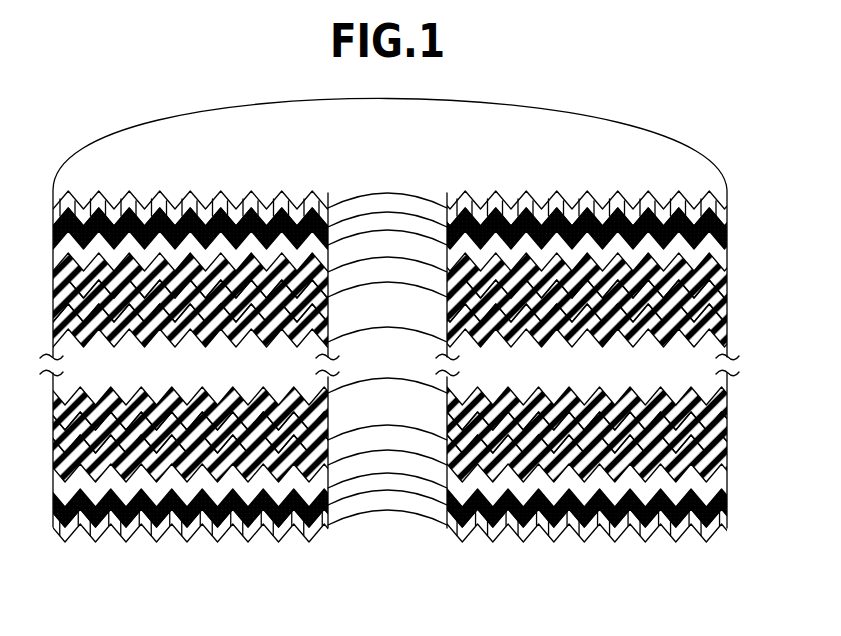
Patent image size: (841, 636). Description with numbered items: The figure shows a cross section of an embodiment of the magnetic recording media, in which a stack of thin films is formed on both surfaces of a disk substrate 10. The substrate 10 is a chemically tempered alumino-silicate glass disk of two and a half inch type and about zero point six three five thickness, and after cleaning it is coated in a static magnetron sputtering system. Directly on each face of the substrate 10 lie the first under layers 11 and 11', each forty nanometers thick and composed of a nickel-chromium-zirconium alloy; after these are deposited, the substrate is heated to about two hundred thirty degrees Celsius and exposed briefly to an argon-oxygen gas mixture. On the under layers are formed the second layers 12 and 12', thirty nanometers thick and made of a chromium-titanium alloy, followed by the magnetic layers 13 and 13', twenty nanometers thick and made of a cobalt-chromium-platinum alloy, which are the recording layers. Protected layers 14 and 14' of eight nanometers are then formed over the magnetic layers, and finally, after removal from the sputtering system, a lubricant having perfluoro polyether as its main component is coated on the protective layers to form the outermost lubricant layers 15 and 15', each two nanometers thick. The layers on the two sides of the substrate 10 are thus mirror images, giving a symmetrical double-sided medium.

The substrate 10 is at (729, 353).
The first under layer 11 is at (402, 325).
The second layer 12 is at (402, 300).
The magnetic layer 13 is at (402, 275).
The protected layer 14 is at (402, 230).
The lubricant layer 15 is at (402, 208).
The first under layer 11' is at (410, 411).
The second layer 12' is at (410, 441).
The magnetic layer 13' is at (410, 465).
The protected layer 14' is at (410, 508).
The lubricant layer 15' is at (410, 525).